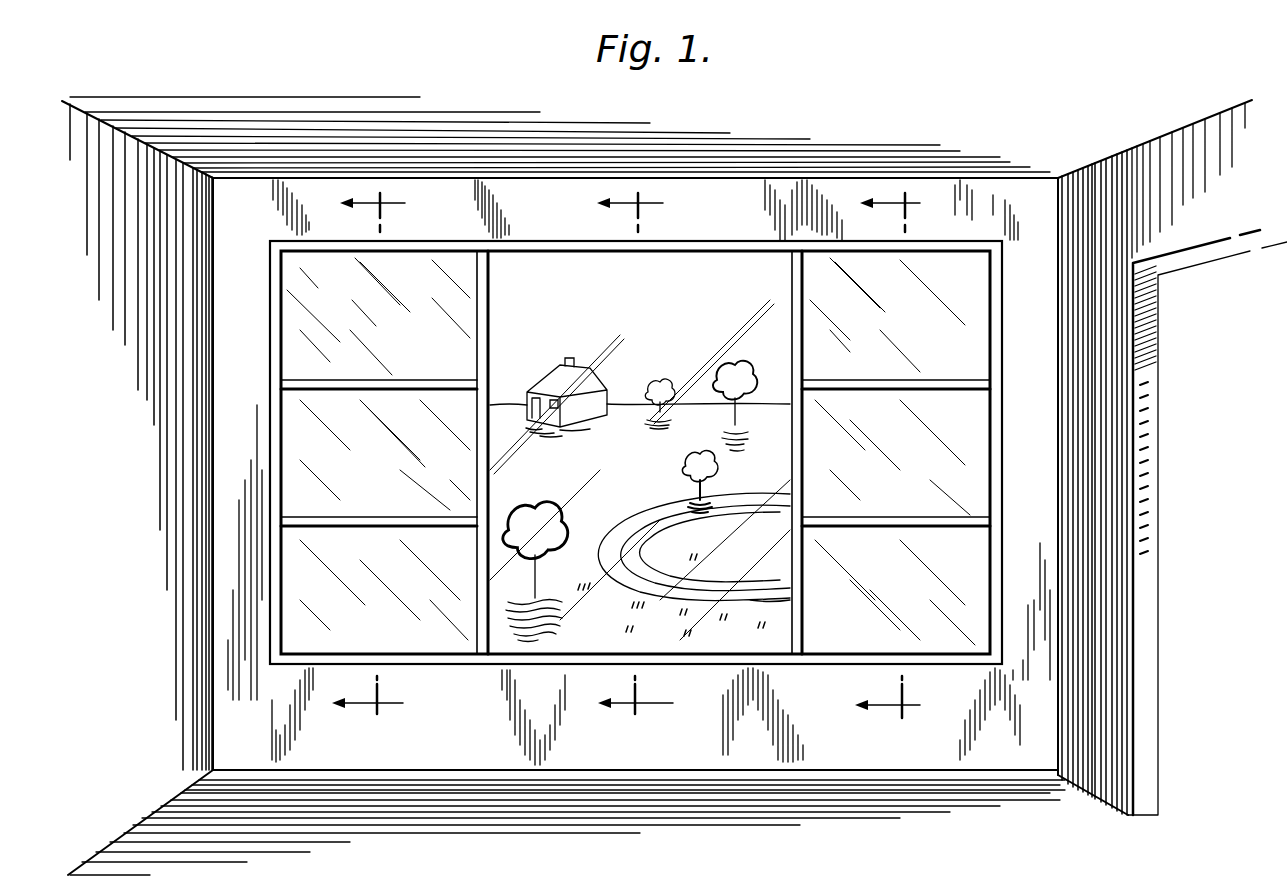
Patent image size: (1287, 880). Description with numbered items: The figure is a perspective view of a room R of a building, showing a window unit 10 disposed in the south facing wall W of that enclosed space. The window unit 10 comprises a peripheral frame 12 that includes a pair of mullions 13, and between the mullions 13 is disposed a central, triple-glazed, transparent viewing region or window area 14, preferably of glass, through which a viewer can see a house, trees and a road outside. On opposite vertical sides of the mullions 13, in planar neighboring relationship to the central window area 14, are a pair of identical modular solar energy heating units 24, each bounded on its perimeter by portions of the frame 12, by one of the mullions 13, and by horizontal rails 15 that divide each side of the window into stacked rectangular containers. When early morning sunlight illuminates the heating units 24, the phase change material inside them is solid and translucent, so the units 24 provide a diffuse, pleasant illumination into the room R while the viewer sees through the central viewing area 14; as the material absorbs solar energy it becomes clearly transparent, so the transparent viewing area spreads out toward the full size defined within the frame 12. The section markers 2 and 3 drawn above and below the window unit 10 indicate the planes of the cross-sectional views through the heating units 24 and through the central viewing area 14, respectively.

The window unit 10 is at (749, 200).
The peripheral frame 12 is at (652, 248).
The mullions 13 is at (488, 327).
The central viewing area 14 is at (549, 278).
The horizontal rail 15 is at (369, 380).
The modular solar energy heating units 24 is at (269, 236).
The wall W is at (956, 178).
The room R is at (188, 533).
The section line 2- 2 is at (624, 461).
The section line 3- 3 is at (629, 461).